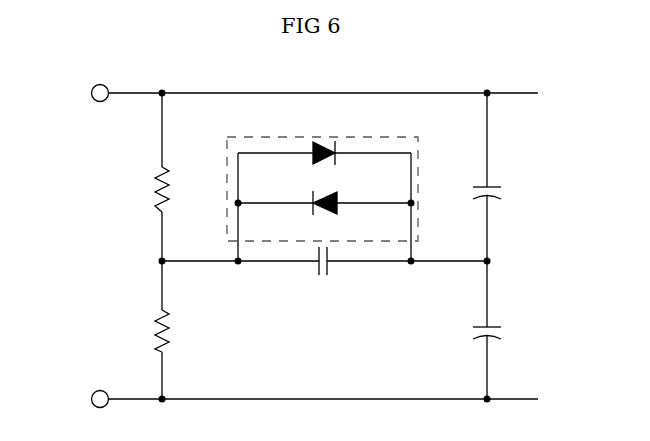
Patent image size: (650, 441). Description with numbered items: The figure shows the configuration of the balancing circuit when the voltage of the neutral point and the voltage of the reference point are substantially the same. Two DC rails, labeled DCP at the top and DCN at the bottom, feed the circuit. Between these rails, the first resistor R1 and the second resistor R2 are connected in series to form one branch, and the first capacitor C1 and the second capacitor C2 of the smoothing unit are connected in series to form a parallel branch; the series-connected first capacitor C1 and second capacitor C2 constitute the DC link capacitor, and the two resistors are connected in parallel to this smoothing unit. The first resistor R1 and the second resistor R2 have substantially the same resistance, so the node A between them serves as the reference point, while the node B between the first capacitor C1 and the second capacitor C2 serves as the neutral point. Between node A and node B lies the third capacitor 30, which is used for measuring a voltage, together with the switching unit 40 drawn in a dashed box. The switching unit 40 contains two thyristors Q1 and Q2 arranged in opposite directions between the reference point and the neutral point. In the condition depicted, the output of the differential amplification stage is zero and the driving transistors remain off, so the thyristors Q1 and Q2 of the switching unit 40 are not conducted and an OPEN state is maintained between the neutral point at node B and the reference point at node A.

The third capacitor 30 is at (330, 272).
The switching unit 40 is at (347, 179).
The first resistor R1 is at (149, 189).
The second resistor R2 is at (149, 331).
The first capacitor C1 is at (501, 191).
The second capacitor C2 is at (501, 333).
The thyristor Q1 is at (336, 161).
The thyristor Q2 is at (336, 211).
The node A is at (154, 263).
The node B is at (496, 263).
The positive DC terminal DCP is at (78, 95).
The negative DC terminal DCN is at (78, 401).